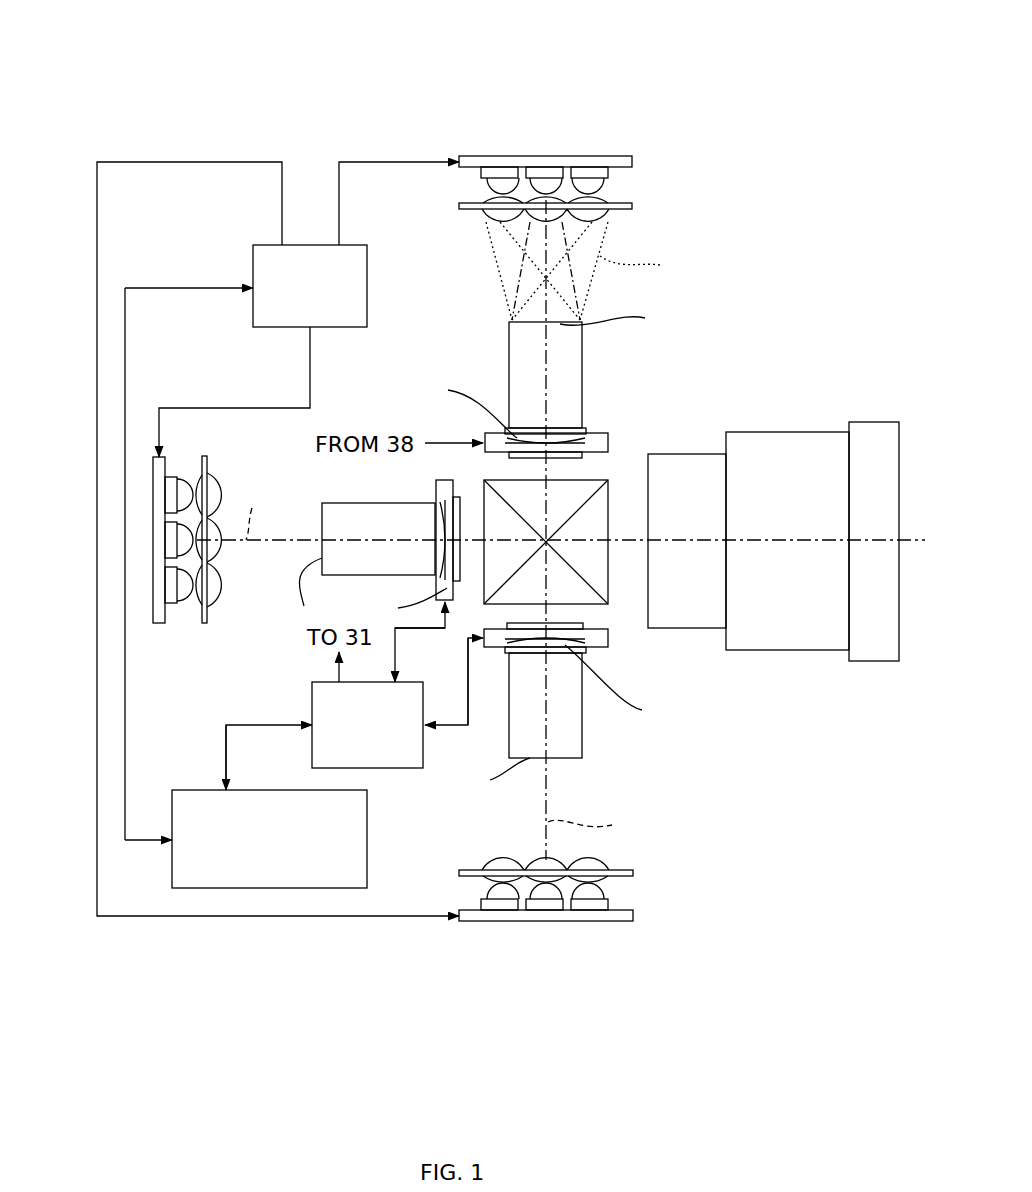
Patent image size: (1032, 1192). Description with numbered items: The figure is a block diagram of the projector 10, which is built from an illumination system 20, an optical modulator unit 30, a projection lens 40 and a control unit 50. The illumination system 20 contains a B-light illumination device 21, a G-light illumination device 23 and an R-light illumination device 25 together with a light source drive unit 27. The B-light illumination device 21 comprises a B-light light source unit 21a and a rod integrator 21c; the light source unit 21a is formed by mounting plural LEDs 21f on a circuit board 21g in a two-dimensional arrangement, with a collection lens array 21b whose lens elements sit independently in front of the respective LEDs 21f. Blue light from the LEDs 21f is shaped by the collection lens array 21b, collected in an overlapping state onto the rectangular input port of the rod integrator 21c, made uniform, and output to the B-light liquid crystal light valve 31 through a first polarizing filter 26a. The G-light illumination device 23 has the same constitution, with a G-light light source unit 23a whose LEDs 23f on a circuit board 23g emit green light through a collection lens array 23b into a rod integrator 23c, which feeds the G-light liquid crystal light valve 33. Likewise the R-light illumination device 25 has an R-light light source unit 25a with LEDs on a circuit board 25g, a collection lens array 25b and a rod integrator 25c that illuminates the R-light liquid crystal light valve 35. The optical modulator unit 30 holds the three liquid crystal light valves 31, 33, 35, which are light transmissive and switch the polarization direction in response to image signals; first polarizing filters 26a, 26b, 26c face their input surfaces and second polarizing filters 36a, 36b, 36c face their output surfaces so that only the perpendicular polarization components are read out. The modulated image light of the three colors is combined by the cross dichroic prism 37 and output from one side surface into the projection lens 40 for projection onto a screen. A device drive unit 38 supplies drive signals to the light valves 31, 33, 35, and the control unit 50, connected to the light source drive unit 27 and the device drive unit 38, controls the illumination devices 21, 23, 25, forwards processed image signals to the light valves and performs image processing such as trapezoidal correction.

The projector 10 is at (899, 46).
The illumination system 20 is at (725, 157).
The B-light illumination device 21 is at (492, 282).
The B-light light source unit 21a is at (637, 155).
The collection lens array 21b is at (640, 205).
The rod integrator 21c is at (525, 350).
The LEDs 21f is at (588, 186).
The circuit board 21g is at (478, 163).
The G-light illumination device 23 is at (262, 617).
The G-light light source unit 23a is at (160, 630).
The collection lens array 23b is at (206, 626).
The rod integrator 23c is at (362, 508).
The LEDs 23f is at (185, 585).
The circuit board 23g is at (157, 468).
The R-light illumination device 25 is at (602, 790).
The R-light light source unit 25a is at (637, 918).
The collection lens array 25b is at (635, 873).
The rod integrator 25c is at (525, 722).
The circuit board 25g is at (588, 893).
The first polarizing filter 26a is at (533, 432).
The first polarizing filter 26b is at (432, 545).
The first polarizing filter 26c is at (553, 656).
The light source drive unit 27 is at (326, 298).
The optical modulator unit 30 is at (648, 398).
The B-light liquid crystal light valve 31 is at (598, 420).
The G-light liquid crystal light valve 33 is at (445, 492).
The R-light liquid crystal light valve 35 is at (585, 648).
The second polarizing filter 36a is at (582, 456).
The second polarizing filter 36b is at (456, 602).
The second polarizing filter 36c is at (578, 626).
The cross dichroic prism 37 is at (610, 483).
The device drive unit 38 is at (383, 737).
The projection lens 40 is at (792, 646).
The control unit 50 is at (284, 851).